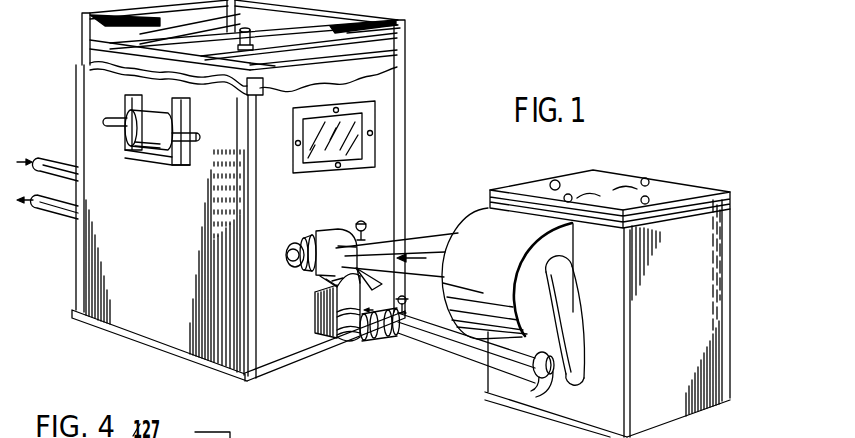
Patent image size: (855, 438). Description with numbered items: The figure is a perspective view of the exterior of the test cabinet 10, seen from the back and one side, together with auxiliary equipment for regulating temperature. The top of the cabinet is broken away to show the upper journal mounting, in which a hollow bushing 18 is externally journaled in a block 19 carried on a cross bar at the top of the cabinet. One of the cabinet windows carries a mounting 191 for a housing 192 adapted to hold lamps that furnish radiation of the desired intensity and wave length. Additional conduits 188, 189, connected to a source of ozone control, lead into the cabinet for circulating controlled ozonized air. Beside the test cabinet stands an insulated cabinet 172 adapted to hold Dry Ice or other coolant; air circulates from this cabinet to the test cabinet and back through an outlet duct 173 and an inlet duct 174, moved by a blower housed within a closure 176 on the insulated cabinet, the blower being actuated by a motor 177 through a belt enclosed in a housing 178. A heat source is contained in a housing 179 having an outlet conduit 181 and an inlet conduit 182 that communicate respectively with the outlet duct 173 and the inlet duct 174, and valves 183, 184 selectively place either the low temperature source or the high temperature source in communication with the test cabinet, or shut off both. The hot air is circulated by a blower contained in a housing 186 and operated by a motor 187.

The cabinet 10 is at (410, 82).
The hollow bushing 18 is at (255, 62).
The block 19 is at (252, 44).
The mounting 191 is at (142, 98).
The housing 192 is at (143, 152).
The conduit 188 is at (57, 153).
The conduit 189 is at (45, 212).
The insulated cabinet 172 is at (720, 318).
The closure 176 is at (480, 222).
The housing 178 is at (571, 326).
The outlet duct 173 is at (423, 246).
The inlet duct 174 is at (469, 358).
The motor 177 is at (543, 385).
The housing 179 is at (322, 320).
The outlet conduit 181 is at (358, 248).
The inlet conduit 182 is at (373, 332).
The valve 183 is at (362, 220).
The valve 184 is at (408, 302).
The housing 186 is at (303, 238).
The motor 187 is at (298, 245).